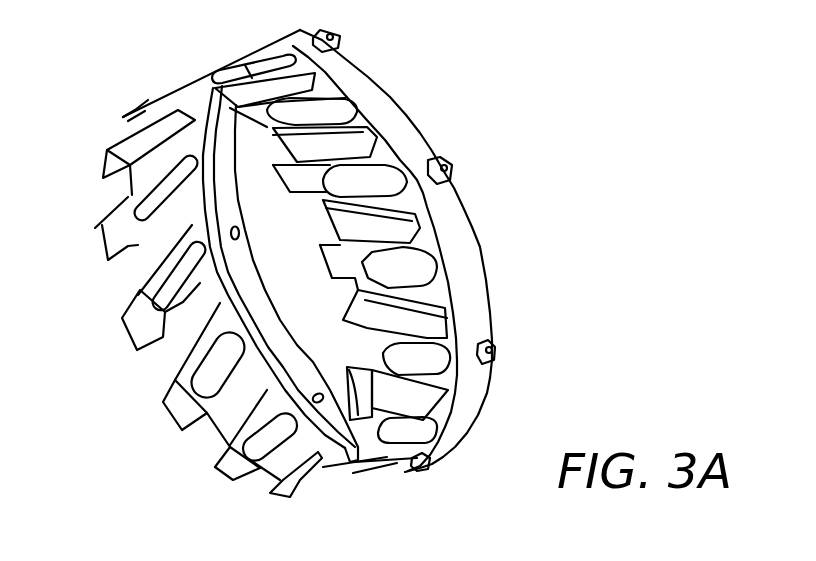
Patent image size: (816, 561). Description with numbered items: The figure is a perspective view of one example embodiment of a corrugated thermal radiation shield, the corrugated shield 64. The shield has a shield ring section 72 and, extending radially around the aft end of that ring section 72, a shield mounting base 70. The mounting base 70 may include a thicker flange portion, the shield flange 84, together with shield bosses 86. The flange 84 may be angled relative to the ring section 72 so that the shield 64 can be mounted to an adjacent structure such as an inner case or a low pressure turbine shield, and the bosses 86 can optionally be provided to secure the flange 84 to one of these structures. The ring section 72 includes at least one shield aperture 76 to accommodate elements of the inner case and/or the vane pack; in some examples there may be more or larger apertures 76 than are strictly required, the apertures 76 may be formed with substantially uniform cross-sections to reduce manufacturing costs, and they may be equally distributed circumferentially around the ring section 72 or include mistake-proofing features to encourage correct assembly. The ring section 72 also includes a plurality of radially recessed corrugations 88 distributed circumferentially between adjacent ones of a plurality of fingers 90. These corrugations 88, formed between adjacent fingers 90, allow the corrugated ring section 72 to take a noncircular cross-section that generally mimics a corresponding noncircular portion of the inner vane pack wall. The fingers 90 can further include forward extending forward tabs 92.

The corrugated shield 64 is at (466, 136).
The shield mounting base 70 is at (410, 137).
The shield ring section 72 is at (181, 78).
The shield apertures 76 is at (409, 281).
The shield flange 84 is at (490, 278).
The shield bosses 86 is at (335, 44).
The corrugations 88 is at (348, 222).
The fingers 90 is at (375, 342).
The forward tabs 92 is at (345, 325).